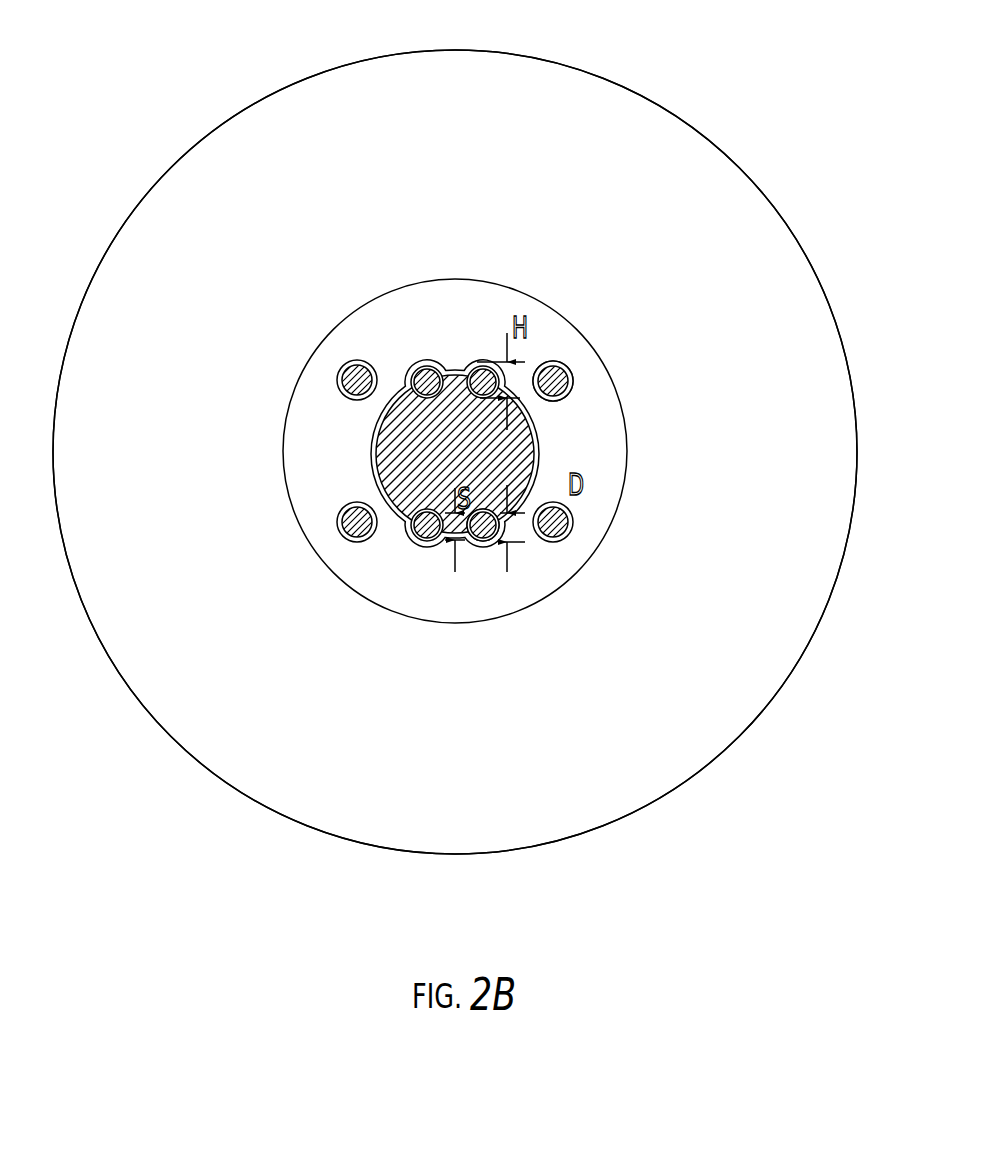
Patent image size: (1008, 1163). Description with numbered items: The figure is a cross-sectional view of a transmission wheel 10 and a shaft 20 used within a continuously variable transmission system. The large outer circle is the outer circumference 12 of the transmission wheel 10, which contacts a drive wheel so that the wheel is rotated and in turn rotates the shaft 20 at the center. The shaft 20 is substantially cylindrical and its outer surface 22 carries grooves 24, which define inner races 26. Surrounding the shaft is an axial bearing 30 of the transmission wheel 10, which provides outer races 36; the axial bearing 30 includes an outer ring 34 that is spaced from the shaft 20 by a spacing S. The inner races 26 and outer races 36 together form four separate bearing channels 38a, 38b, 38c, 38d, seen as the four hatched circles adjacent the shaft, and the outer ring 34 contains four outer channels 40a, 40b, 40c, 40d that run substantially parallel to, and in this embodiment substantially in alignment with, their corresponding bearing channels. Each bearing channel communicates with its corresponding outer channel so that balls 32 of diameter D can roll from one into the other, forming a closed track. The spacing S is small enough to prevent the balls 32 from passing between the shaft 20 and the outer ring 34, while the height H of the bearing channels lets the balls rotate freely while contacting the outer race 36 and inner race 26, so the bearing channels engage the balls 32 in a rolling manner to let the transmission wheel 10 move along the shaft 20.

The transmission wheel 10 is at (342, 803).
The outer circumference 12 is at (763, 192).
The shaft 20 is at (373, 458).
The outer surface 22 is at (538, 468).
The grooves 24 is at (445, 373).
The inner races 26 is at (425, 398).
The axial bearing 30 is at (542, 577).
The balls 32 is at (572, 377).
The outer ring 34 is at (375, 476).
The outer races 36 is at (481, 366).
The bearing channel 38a is at (425, 366).
The bearing channel 38b is at (555, 362).
The bearing channel 38c is at (418, 540).
The bearing channel 38d is at (470, 541).
The outer channel 40a is at (352, 361).
The outer channel 40b is at (568, 366).
The outer channel 40c is at (352, 542).
The outer channel 40d is at (573, 524).